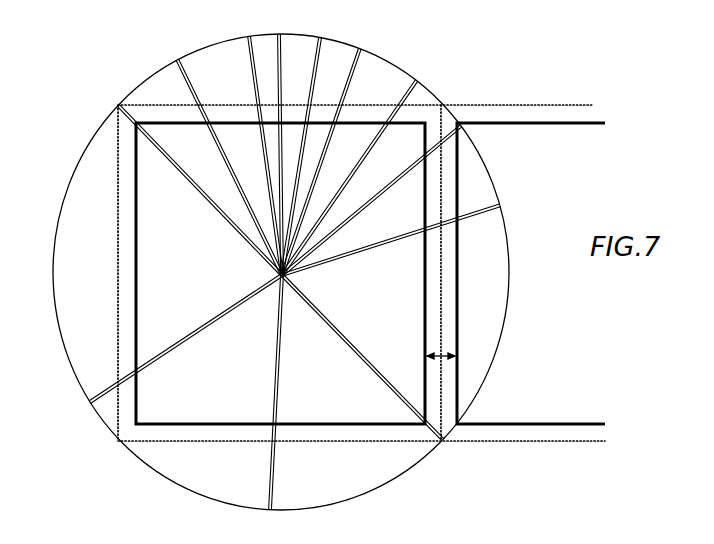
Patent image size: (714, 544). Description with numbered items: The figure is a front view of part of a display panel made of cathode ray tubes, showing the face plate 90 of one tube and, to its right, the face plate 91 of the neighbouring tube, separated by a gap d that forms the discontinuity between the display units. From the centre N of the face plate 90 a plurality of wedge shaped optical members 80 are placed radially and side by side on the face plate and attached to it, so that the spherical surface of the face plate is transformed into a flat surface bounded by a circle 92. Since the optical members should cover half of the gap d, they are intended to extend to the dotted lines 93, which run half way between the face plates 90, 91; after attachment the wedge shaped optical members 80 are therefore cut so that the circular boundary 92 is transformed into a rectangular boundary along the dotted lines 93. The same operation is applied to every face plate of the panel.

The wedge shaped optical members 80 is at (317, 57).
The face plate 90 is at (425, 263).
The face plate of the neighbouring cathode ray tube 91 is at (457, 195).
The circle 92 is at (433, 92).
The dotted lines 93 is at (386, 95).
The centre of the face plate N is at (276, 273).
The gap d is at (452, 355).